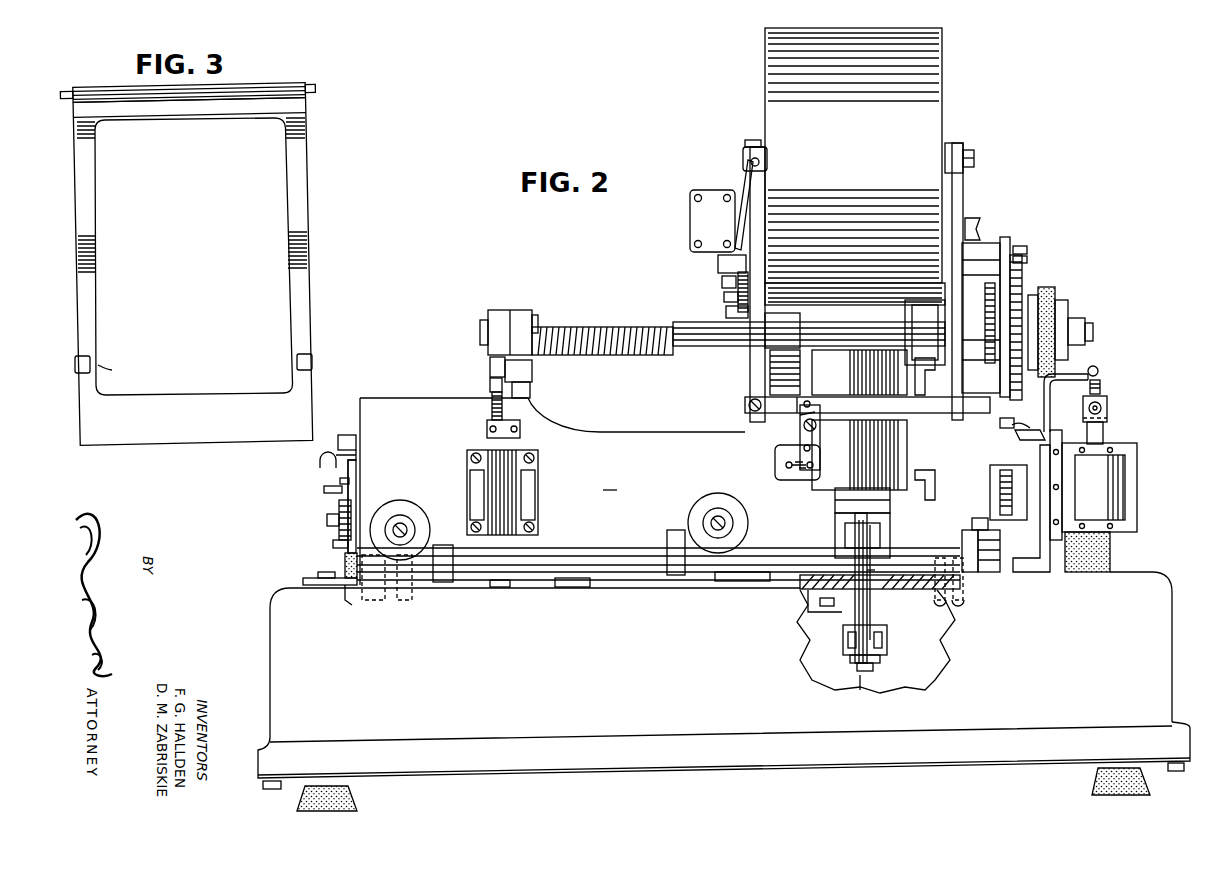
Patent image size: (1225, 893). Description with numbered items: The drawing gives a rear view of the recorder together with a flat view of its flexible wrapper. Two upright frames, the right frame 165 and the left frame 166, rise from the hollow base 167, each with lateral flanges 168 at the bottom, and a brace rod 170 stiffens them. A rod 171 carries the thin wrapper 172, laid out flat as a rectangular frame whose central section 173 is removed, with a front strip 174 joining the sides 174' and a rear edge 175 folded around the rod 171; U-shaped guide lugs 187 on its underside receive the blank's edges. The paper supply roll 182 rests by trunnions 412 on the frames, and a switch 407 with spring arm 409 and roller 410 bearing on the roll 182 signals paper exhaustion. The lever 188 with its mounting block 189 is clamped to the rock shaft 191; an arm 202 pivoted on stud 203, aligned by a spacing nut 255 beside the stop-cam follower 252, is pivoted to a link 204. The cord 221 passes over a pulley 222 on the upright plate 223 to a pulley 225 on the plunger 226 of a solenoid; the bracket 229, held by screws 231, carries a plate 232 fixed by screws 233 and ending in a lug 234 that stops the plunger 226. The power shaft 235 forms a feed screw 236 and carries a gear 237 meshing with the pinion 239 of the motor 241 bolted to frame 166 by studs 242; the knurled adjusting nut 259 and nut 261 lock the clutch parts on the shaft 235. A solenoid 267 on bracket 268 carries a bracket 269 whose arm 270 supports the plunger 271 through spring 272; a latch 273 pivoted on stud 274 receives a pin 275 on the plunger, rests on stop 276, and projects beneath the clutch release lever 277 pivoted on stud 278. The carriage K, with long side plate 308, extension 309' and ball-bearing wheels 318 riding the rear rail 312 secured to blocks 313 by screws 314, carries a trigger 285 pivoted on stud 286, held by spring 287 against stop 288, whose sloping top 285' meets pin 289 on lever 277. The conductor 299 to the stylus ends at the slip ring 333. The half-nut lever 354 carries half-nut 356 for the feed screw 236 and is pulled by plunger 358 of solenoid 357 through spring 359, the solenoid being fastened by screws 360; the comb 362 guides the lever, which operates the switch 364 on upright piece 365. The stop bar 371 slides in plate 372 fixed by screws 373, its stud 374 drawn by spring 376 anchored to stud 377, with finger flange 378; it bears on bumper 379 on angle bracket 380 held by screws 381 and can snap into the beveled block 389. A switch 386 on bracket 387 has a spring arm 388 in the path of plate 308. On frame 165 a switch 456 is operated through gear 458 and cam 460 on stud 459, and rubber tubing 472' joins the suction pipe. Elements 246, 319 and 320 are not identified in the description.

In FIG. 3, the rod 171 is at (320, 91).
In FIG. 3, the wrapper 172 is at (338, 258).
In FIG. 3, the central section 173 is at (118, 393).
In FIG. 3, the front strip 174 is at (193, 282).
In FIG. 3, the sides 174' is at (215, 195).
In FIG. 3, the rear edge 175 is at (213, 108).
In FIG. 3, the guide lugs 187 is at (312, 358).
In FIG. 2, the supply roll 182 is at (927, 72).
In FIG. 2, the right frame 165 is at (756, 196).
In FIG. 2, the left frame 166 is at (955, 191).
In FIG. 2, the base 167 is at (1160, 664).
In FIG. 2, the lateral flanges 168 is at (745, 583).
In FIG. 2, the brace rod 170 is at (850, 300).
In FIG. 2, the lever 188 is at (885, 540).
In FIG. 2, the mounting block 189 is at (858, 502).
In FIG. 2, the rock shaft 191 is at (835, 510).
In FIG. 2, the arm 202 is at (1022, 249).
In FIG. 2, the stud 203 is at (1024, 258).
In FIG. 2, the link 204 is at (1025, 480).
In FIG. 2, the cord 221 is at (886, 570).
In FIG. 2, the pulley 222 is at (840, 523).
In FIG. 2, the upright plate 223 is at (800, 587).
In FIG. 2, the pulley 225 is at (843, 636).
In FIG. 2, the plunger 226 is at (850, 658).
In FIG. 2, the bracket 229 is at (810, 610).
In FIG. 2, the screws 231 is at (830, 608).
In FIG. 2, the plate 232 is at (905, 660).
In FIG. 2, the screws 233 is at (865, 678).
In FIG. 2, the lug 234 is at (875, 640).
In FIG. 2, the power shaft 235 is at (898, 328).
In FIG. 2, the feed screw 236 is at (598, 328).
In FIG. 2, the gear 237 is at (985, 328).
In FIG. 2, the pinion 239 is at (915, 418).
In FIG. 2, the motor 241 is at (843, 380).
In FIG. 2, the studs 242 is at (935, 362).
In FIG. 2, the gear 246 is at (1022, 283).
In FIG. 2, the follower 252 is at (1004, 244).
In FIG. 2, the spacing nut 255 is at (990, 242).
In FIG. 2, the adjusting nut 259 is at (1052, 290).
In FIG. 2, the nut 261 is at (1070, 315).
In FIG. 2, the solenoid 267 is at (1105, 487).
In FIG. 2, the bracket 268 is at (1063, 565).
In FIG. 2, the bracket 269 is at (1072, 374).
In FIG. 2, the lateral arm 270 is at (1098, 366).
In FIG. 2, the plunger 271 is at (1107, 420).
In FIG. 2, the coil spring 272 is at (1100, 385).
In FIG. 2, the latch 273 is at (1105, 428).
In FIG. 2, the stud 274 is at (1018, 431).
In FIG. 2, the pin 275 is at (1107, 412).
In FIG. 2, the stop 276 is at (1043, 430).
In FIG. 2, the clutch release lever 277 is at (867, 455).
In FIG. 2, the stud 278 is at (748, 403).
In FIG. 2, the trigger 285 is at (824, 437).
In FIG. 2, the sloping top 285' is at (780, 405).
In FIG. 2, the stud 286 is at (800, 428).
In FIG. 2, the coil spring 287 is at (794, 480).
In FIG. 2, the stop 288 is at (795, 450).
In FIG. 2, the pin 289 is at (811, 404).
In FIG. 2, the insulated conductor 299 is at (320, 462).
In FIG. 2, the side plate 308 is at (657, 440).
In FIG. 2, the extension 309' is at (545, 390).
In FIG. 2, the rear rail 312 is at (640, 583).
In FIG. 2, the blocks 313 is at (413, 592).
In FIG. 2, the screws 314 is at (380, 602).
In FIG. 2, the ball-bearing wheels 318 is at (420, 507).
In FIG. 2, the block 319 is at (500, 587).
In FIG. 2, the bearing 320 is at (450, 582).
In FIG. 2, the slip ring 333 is at (347, 435).
In FIG. 2, the half-nut lever 354 is at (490, 366).
In FIG. 2, the half-nut 356 is at (490, 385).
In FIG. 2, the solenoid 357 is at (538, 505).
In FIG. 2, the plunger 358 is at (488, 443).
In FIG. 2, the contractile spring 359 is at (491, 407).
In FIG. 2, the screws 360 is at (471, 460).
In FIG. 2, the comb 362 is at (1008, 418).
In FIG. 2, the switch 364 is at (503, 318).
In FIG. 2, the upright piece 365 is at (532, 368).
In FIG. 2, the stop bar 371 is at (336, 531).
In FIG. 2, the plate 372 is at (357, 490).
In FIG. 2, the screws 373 is at (340, 481).
In FIG. 2, the stud 374 is at (343, 500).
In FIG. 2, the contractile spring 376 is at (353, 508).
In FIG. 2, the stud 377 is at (328, 520).
In FIG. 2, the lateral flange 378 is at (358, 450).
In FIG. 2, the bumper 379 is at (352, 592).
In FIG. 2, the angle bracket 380 is at (342, 558).
In FIG. 2, the screws 381 is at (320, 574).
In FIG. 2, the switch 386 is at (998, 570).
In FIG. 2, the bracket 387 is at (990, 575).
In FIG. 2, the spring arm 388 is at (975, 525).
In FIG. 2, the beveled block 389 is at (573, 587).
In FIG. 2, the switch 407 is at (692, 220).
In FIG. 2, the spring arm 409 is at (741, 181).
In FIG. 2, the roller 410 is at (757, 147).
In FIG. 2, the trunnions 412 is at (972, 158).
In FIG. 2, the switch 456 is at (718, 262).
In FIG. 2, the gear 458 is at (740, 318).
In FIG. 2, the stud 459 is at (715, 287).
In FIG. 2, the cam 460 is at (732, 300).
In FIG. 2, the rubber tubing 472' is at (1112, 552).
In FIG. 2, the carriage K is at (610, 482).